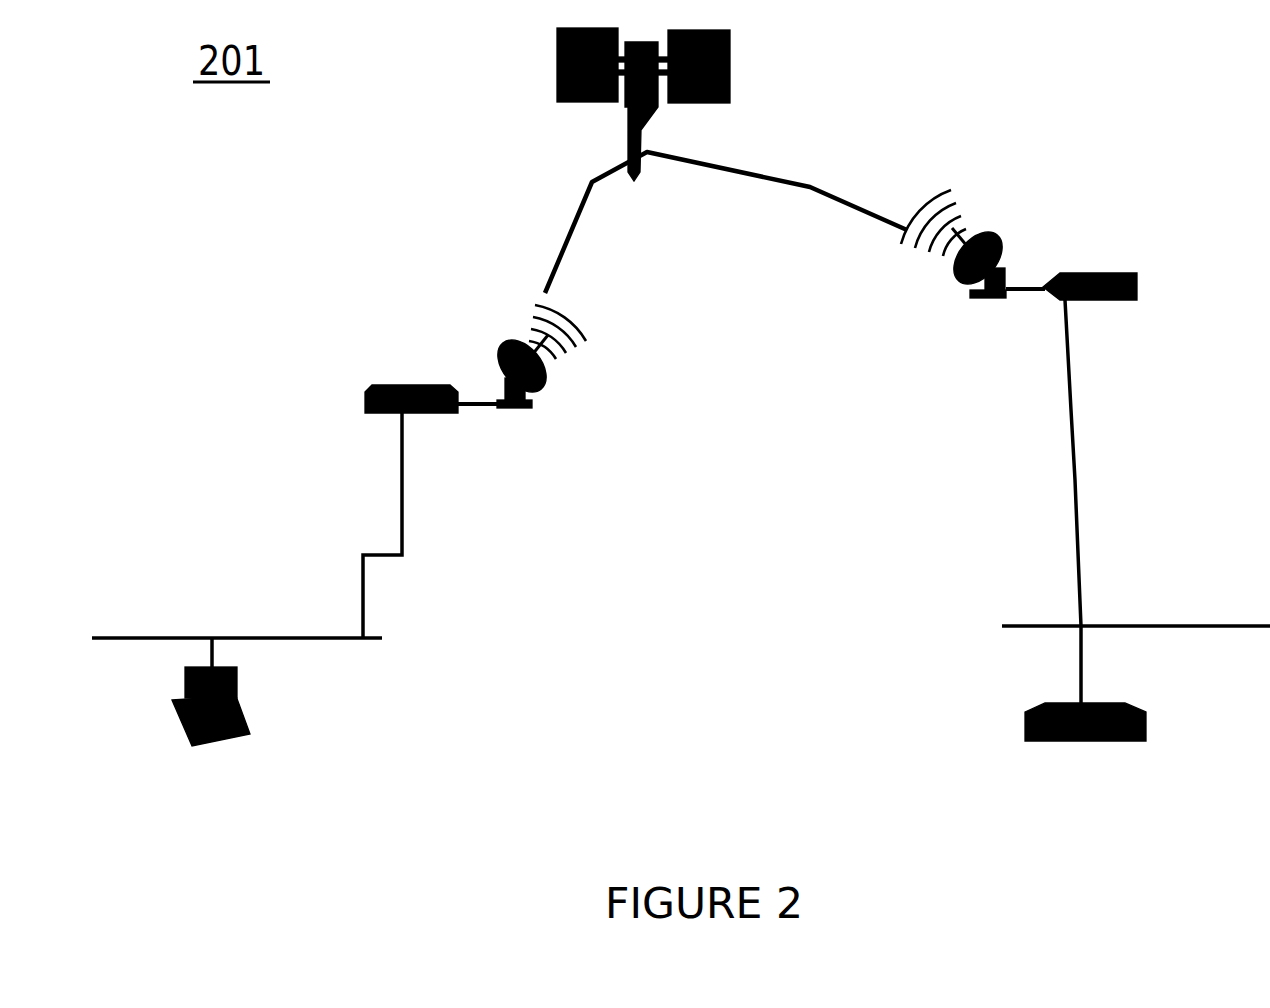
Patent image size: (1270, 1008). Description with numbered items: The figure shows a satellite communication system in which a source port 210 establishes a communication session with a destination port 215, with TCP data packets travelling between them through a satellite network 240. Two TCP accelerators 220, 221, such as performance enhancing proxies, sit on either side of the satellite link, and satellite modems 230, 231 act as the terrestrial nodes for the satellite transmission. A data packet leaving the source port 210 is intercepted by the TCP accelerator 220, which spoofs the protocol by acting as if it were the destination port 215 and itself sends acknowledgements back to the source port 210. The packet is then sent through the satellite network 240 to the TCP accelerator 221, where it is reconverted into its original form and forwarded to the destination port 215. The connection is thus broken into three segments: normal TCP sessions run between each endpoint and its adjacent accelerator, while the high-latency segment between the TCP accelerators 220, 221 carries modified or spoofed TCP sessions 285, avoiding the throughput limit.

The source port 210 is at (225, 746).
The destination port 215 is at (1088, 751).
The TCP accelerator 220 is at (398, 382).
The TCP accelerator 221 is at (1091, 264).
The satellite modem 230 is at (490, 366).
The satellite modem 231 is at (1018, 241).
The satellite network 240 is at (616, 131).
The spoofed TCP sessions 285 is at (829, 212).